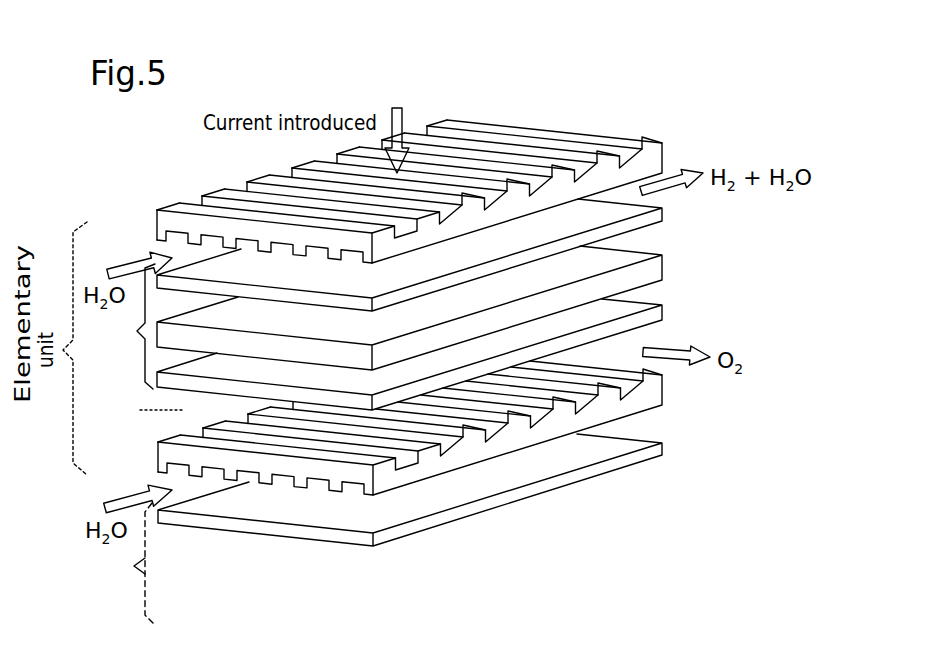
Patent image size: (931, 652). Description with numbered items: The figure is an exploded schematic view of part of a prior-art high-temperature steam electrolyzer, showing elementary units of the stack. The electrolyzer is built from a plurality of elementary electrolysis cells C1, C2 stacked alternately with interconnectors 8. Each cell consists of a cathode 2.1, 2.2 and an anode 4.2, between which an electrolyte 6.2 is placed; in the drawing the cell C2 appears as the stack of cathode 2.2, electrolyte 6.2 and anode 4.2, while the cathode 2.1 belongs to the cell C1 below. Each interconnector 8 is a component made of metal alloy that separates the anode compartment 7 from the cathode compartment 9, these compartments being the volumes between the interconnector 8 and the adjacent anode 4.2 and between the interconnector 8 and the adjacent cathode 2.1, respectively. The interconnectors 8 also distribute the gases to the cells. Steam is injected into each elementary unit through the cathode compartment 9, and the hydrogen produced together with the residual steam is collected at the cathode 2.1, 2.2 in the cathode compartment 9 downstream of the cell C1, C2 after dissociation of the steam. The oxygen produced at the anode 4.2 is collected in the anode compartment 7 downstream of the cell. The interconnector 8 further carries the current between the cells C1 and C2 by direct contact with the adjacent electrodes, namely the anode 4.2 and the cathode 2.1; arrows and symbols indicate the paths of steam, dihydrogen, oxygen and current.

The cathode 2.1 is at (662, 448).
The cathode 2.2 is at (662, 209).
The anode 4.2 is at (662, 310).
The electrolyte 6.2 is at (662, 265).
The anode compartment 7 is at (185, 406).
The interconnector 8 is at (377, 312).
The cathode compartment 9 is at (157, 237).
The elementary electrolysis cell C1 is at (129, 563).
The elementary electrolysis cell C2 is at (128, 326).